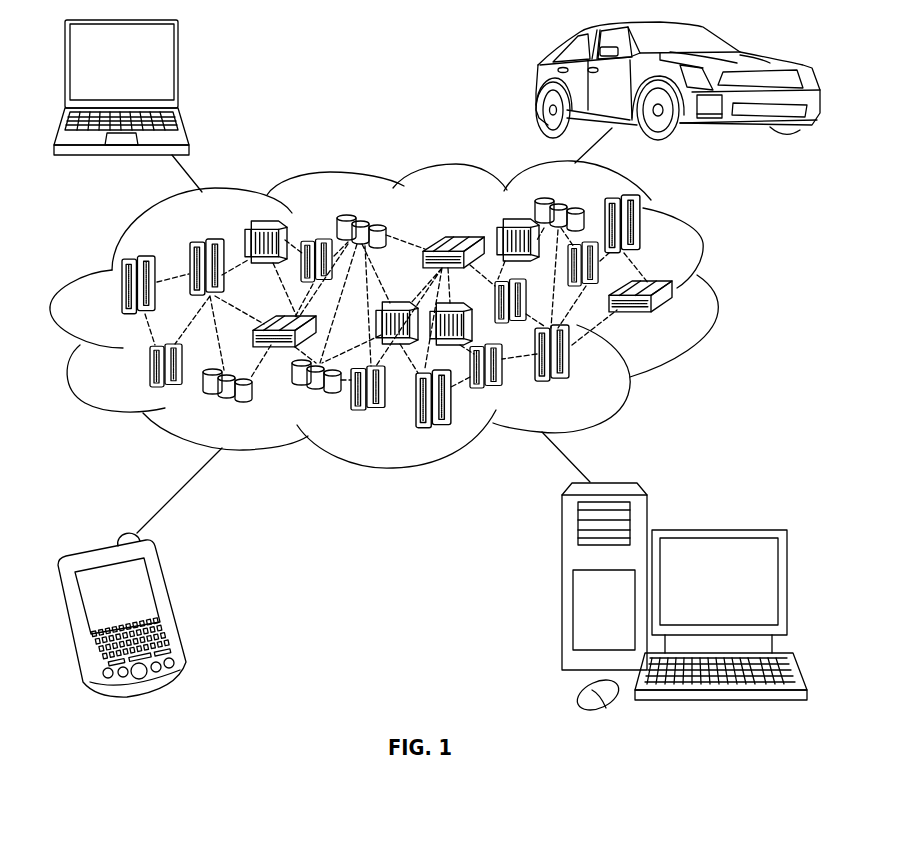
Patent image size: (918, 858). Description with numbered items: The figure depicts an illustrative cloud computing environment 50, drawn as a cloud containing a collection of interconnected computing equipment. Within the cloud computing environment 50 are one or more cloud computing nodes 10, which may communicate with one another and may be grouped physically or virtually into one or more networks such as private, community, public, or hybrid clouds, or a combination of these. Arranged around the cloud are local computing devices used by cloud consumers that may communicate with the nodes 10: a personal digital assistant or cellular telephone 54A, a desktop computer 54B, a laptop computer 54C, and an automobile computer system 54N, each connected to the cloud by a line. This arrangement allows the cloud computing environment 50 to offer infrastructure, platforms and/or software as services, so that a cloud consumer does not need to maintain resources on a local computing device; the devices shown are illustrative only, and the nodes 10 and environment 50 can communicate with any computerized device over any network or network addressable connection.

The cloud computing nodes 10 is at (668, 318).
The cloud computing environment 50 is at (717, 293).
The personal digital assistant or cellular telephone 54A is at (172, 606).
The desktop computer 54B is at (716, 528).
The laptop computer 54C is at (178, 70).
The automobile computer system 54N is at (536, 82).